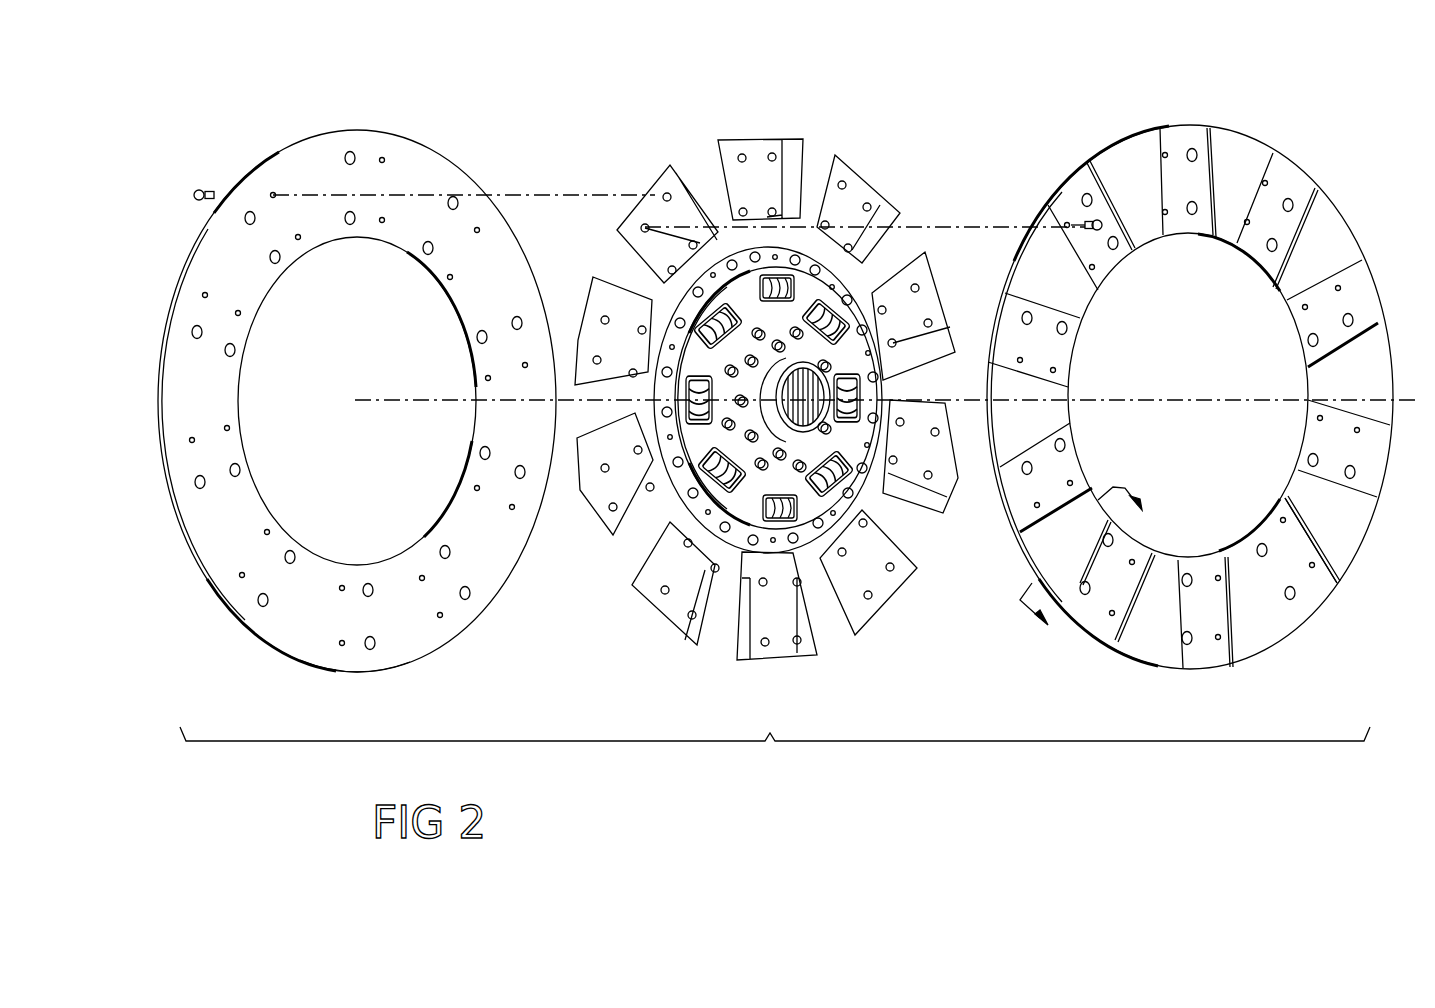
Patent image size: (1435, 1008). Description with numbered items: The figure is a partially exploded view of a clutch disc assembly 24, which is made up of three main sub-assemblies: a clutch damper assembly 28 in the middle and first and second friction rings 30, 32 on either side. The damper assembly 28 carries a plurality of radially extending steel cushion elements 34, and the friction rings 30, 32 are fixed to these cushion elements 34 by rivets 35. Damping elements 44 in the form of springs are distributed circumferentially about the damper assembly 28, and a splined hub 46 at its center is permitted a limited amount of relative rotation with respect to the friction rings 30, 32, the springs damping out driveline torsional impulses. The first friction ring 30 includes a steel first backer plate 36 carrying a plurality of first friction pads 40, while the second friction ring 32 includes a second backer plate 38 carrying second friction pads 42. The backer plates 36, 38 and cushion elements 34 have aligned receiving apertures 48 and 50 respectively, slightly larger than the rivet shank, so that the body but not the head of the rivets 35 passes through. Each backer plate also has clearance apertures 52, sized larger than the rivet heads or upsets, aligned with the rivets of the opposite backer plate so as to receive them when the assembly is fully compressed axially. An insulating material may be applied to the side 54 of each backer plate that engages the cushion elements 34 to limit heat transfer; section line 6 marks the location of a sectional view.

The clutch disc assembly 24 is at (775, 751).
The clutch damper assembly 28 is at (885, 138).
The first friction ring 30 is at (443, 153).
The second friction ring 32 is at (1313, 187).
The cushion elements 34 is at (675, 618).
The rivets 35 is at (200, 189).
The first backer plate 36 is at (350, 672).
The second backer plate 38 is at (1303, 607).
The first friction pads 40 is at (158, 371).
The second friction pads 42 is at (1147, 640).
The damping elements 44 is at (777, 283).
The splined hub 46 is at (770, 363).
The receiving apertures 48 is at (525, 363).
The receiving apertures 50 is at (829, 224).
The clearance apertures 52 is at (428, 255).
The side 54 is at (443, 614).
The section line 6- 6 is at (1088, 559).